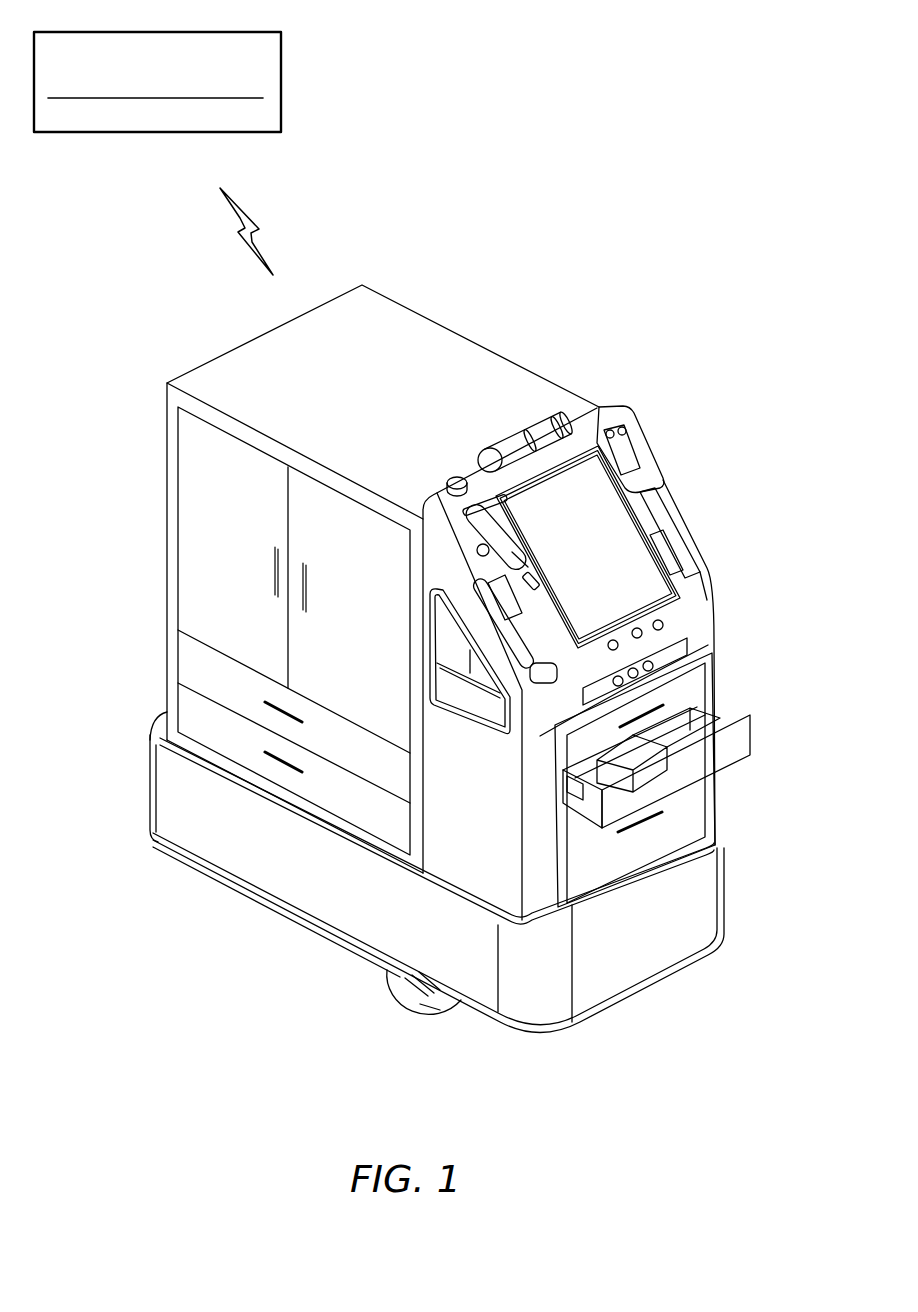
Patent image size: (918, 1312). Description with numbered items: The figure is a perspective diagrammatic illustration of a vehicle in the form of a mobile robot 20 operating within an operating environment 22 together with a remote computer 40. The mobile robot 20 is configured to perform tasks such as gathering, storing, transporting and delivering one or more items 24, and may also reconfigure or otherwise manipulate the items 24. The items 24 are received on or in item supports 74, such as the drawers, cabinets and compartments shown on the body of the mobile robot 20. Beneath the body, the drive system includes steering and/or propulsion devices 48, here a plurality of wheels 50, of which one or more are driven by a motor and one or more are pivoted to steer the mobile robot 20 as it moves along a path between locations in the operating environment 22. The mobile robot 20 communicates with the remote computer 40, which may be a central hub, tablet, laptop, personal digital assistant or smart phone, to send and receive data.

The mobile robot 20 is at (437, 659).
The operating environment 22 is at (546, 154).
The items 24 is at (650, 743).
The remote computer 40 is at (281, 79).
The steering and/or propulsion device 48 is at (401, 1003).
The wheels 50 is at (437, 1008).
The item supports 74 is at (186, 574).